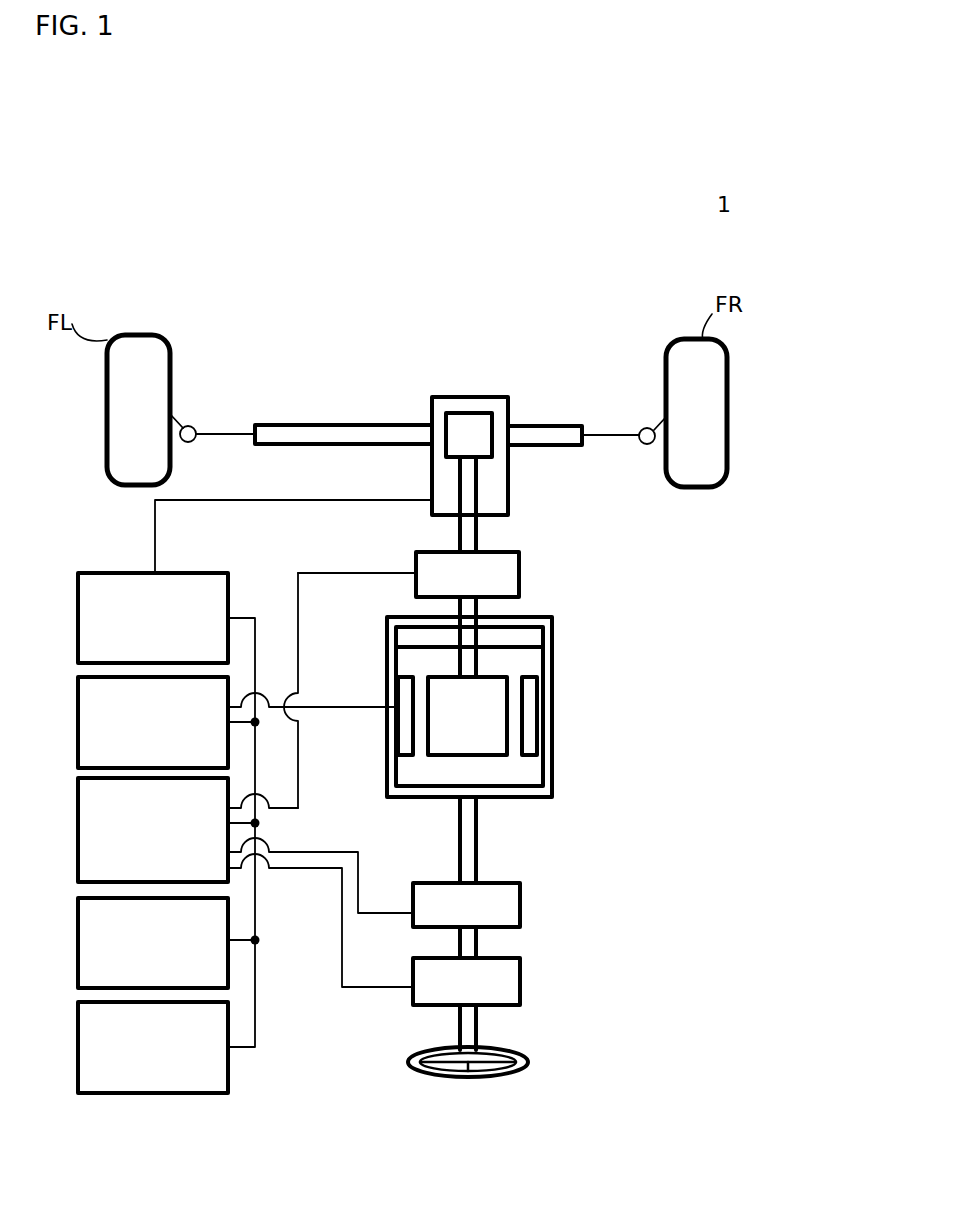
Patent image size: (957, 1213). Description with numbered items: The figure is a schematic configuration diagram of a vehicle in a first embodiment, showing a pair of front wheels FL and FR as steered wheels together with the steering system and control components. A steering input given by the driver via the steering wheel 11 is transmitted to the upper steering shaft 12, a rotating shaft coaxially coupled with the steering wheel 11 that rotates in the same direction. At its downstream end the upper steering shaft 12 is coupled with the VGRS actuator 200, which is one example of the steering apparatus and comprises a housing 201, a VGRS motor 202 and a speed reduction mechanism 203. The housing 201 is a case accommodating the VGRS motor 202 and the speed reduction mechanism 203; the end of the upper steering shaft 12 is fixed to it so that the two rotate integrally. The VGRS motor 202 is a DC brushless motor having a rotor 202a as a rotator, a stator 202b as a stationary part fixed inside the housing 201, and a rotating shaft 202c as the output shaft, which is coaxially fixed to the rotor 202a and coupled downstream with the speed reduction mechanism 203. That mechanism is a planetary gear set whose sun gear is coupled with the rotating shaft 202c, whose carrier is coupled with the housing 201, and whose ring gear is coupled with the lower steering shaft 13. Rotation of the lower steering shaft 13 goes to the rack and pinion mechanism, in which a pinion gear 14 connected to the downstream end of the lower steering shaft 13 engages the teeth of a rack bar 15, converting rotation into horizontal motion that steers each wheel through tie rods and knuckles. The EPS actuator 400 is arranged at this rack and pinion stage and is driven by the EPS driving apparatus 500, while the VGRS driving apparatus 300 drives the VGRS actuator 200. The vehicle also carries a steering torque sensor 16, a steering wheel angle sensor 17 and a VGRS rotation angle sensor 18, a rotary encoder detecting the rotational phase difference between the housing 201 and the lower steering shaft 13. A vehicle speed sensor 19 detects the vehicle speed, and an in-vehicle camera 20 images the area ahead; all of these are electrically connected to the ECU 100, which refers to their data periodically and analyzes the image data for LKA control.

The steering wheel 11 is at (420, 1068).
The upper steering shaft 12 is at (470, 1030).
The lower steering shaft 13 is at (470, 533).
The pinion gear 14 is at (466, 413).
The rack bar 15 is at (290, 425).
The steering torque sensor 16 is at (520, 985).
The steering wheel angle sensor 17 is at (520, 915).
The VGRS rotation angle sensor 18 is at (415, 553).
The vehicle speed sensor 19 is at (78, 898).
The in-vehicle camera 20 is at (78, 1002).
The electronic control unit 100 is at (78, 778).
The VGRS actuator 200 is at (553, 721).
The housing 201 is at (552, 770).
The VGRS motor 202 is at (496, 718).
The rotor 202a is at (475, 695).
The stator 202b is at (530, 717).
The rotating shaft 202c is at (473, 662).
The speed reduction mechanism 203 is at (530, 640).
The VGRS driving apparatus 300 is at (78, 677).
The EPS actuator 400 is at (508, 487).
The EPS driving apparatus 500 is at (78, 573).